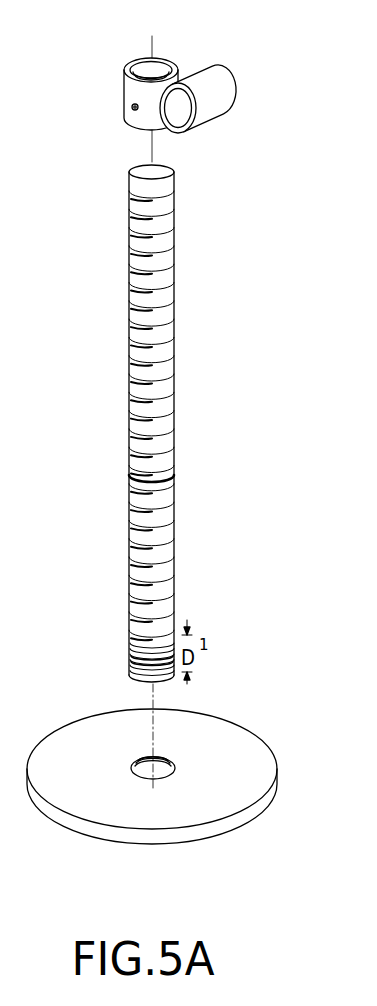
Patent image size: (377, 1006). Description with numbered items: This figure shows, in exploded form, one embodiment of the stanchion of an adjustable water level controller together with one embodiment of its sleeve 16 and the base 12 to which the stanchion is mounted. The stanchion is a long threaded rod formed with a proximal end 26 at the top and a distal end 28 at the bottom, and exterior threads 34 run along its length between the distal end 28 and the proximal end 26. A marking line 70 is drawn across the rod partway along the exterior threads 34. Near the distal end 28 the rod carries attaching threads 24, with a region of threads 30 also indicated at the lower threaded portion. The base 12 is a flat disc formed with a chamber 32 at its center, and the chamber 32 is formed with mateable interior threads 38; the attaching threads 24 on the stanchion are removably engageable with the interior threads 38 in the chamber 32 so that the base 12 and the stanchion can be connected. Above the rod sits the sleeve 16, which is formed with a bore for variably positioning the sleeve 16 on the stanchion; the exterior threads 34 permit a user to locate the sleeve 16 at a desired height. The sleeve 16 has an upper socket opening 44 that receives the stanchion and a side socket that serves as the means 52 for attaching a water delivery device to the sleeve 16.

The base 12 is at (177, 786).
The sleeve 16 is at (173, 68).
The attaching threads 24 is at (130, 648).
The proximal end 26 is at (175, 167).
The distal end 28 is at (130, 677).
The threads 30 is at (130, 660).
The chamber 32 is at (147, 778).
The exterior threads 34 is at (139, 432).
The interior threads 38 is at (106, 786).
The upper socket opening 44 is at (172, 62).
The means for attaching water delivery device to sleeve 52 is at (213, 100).
The indicator line 70 is at (130, 475).